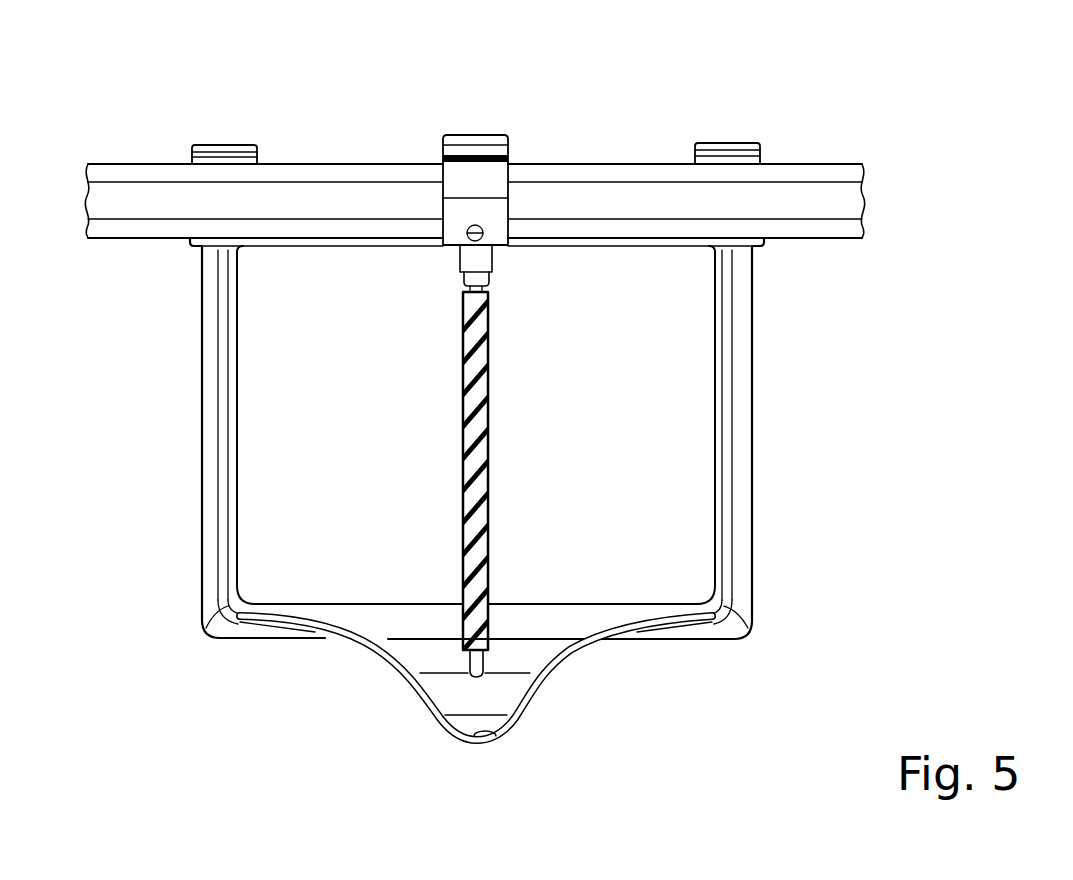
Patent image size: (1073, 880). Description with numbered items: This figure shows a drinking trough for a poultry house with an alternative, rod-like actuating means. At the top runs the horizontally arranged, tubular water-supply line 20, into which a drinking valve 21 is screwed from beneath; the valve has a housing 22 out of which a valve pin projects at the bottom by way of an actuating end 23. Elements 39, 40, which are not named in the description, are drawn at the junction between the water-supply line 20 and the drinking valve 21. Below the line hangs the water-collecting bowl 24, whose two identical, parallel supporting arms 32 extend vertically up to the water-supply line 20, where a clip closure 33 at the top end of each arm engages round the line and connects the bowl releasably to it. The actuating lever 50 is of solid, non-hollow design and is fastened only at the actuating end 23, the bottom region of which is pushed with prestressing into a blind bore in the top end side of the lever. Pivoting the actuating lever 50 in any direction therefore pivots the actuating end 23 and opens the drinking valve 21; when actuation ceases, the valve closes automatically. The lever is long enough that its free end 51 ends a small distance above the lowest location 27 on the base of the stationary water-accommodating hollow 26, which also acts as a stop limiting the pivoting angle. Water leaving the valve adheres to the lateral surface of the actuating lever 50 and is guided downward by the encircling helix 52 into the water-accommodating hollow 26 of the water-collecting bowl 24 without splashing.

The water-supply line 20 is at (866, 195).
The drinking valve 21 is at (556, 156).
The housing 22 is at (482, 259).
The actuating end 23 is at (483, 290).
The water-collecting bowl 24 is at (787, 538).
The water-accommodating hollow 26 is at (543, 670).
The lowest location 27 is at (503, 733).
The supporting arm 32 is at (738, 430).
The clip closure 33 is at (215, 148).
The holder 39 is at (475, 143).
The bearing block 40 is at (460, 182).
The actuating lever 50 is at (555, 484).
The free end 51 is at (467, 662).
The helix 52 is at (487, 397).